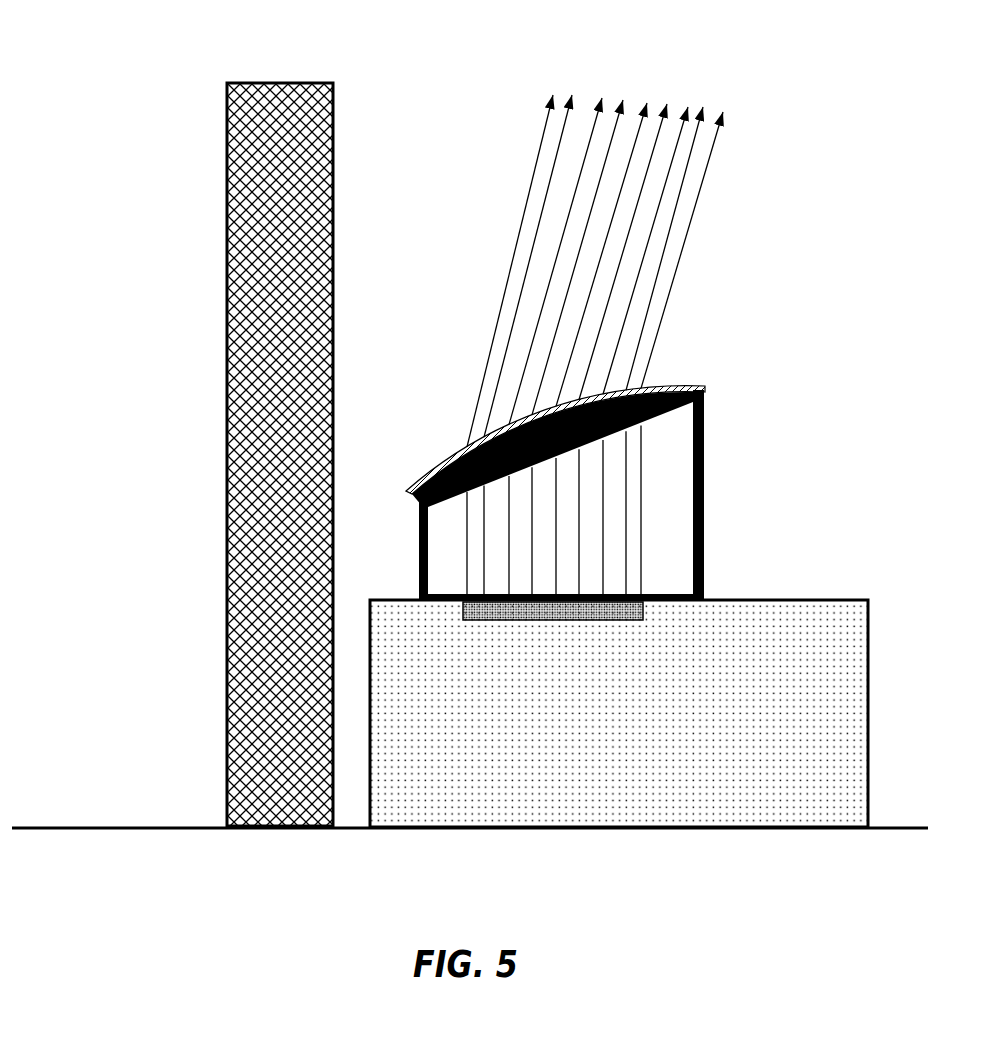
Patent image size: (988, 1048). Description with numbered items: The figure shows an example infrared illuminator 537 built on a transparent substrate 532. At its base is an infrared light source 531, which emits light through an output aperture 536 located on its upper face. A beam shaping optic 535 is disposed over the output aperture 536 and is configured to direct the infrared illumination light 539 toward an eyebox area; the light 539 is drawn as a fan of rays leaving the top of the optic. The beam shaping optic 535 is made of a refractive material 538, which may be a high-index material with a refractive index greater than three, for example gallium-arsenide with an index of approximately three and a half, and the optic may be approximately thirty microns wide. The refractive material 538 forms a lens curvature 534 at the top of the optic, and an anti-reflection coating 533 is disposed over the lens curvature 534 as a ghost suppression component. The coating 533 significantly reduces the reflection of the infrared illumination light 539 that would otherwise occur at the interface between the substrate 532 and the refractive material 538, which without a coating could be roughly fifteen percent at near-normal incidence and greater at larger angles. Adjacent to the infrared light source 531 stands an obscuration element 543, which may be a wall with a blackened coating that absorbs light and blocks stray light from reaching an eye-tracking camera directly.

The infrared light source 531 is at (832, 800).
The substrate 532 is at (165, 100).
The anti-reflection coating 533 is at (435, 452).
The lens curvature 534 is at (675, 393).
The beam shaping optic 535 is at (710, 407).
The output aperture 536 is at (610, 623).
The infrared illuminator 537 is at (817, 397).
The refractive material 538 is at (683, 586).
The infrared illumination light 539 is at (770, 107).
The obscuration element 543 is at (298, 703).